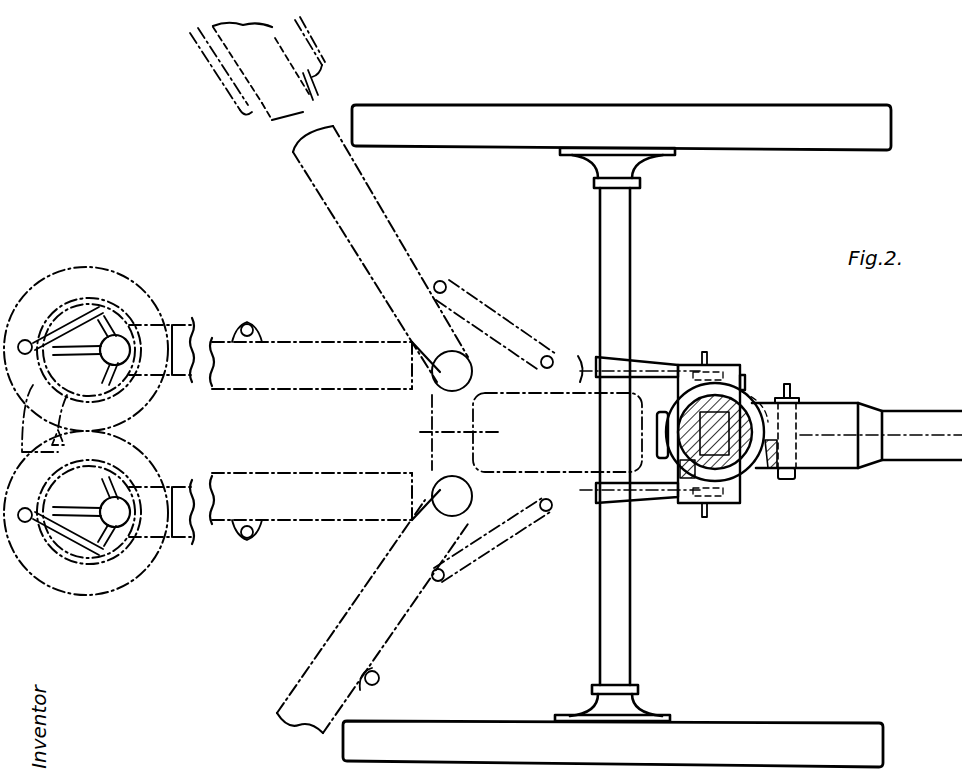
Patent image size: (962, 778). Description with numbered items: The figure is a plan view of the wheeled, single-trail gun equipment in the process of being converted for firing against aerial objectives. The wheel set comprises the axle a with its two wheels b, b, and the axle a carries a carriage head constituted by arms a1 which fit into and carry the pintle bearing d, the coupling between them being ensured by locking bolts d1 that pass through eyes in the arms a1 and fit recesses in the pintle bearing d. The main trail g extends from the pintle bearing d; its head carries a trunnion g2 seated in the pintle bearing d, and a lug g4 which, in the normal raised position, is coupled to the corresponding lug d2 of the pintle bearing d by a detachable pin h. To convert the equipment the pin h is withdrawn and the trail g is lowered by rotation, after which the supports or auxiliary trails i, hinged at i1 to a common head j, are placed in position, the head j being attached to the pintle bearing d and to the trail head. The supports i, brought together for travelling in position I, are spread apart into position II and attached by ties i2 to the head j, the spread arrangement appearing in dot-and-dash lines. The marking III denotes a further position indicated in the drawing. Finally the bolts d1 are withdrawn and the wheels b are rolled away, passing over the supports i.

The axle a is at (628, 253).
The arms a1 is at (652, 360).
The wheels b is at (790, 128).
The pintle bearing d is at (748, 395).
The locking bolts d1 is at (707, 352).
The lug d2 is at (802, 412).
The main trail g is at (946, 458).
The trunnion g2 is at (792, 396).
The lug g4 is at (777, 457).
The detachable pin h is at (797, 477).
The supports or auxiliary trails i is at (313, 96).
The hinge i1 is at (470, 366).
The ties i2 is at (520, 547).
The common head j is at (578, 356).
The position I is at (228, 432).
The position II is at (291, 424).
The position III is at (655, 432).